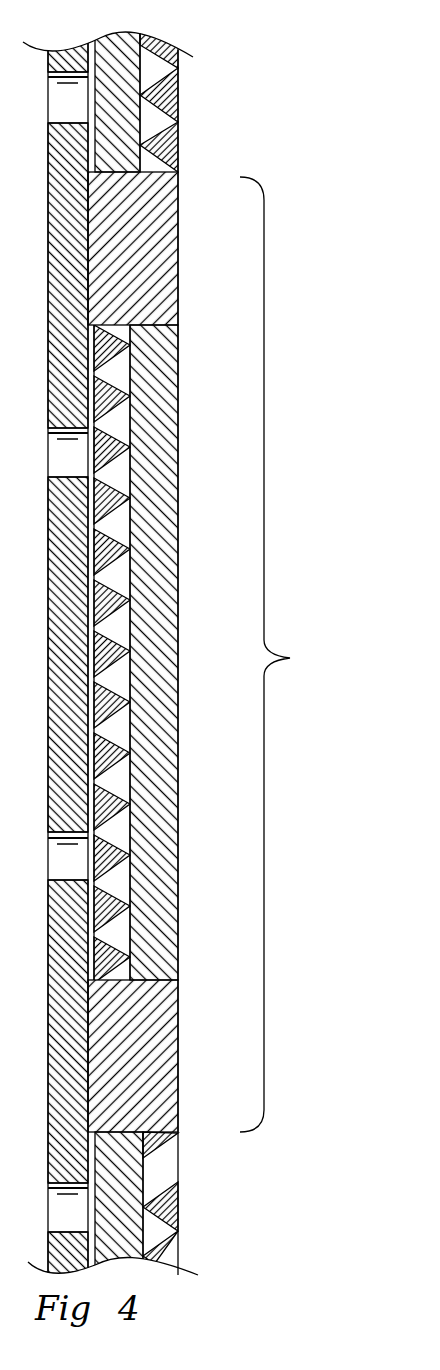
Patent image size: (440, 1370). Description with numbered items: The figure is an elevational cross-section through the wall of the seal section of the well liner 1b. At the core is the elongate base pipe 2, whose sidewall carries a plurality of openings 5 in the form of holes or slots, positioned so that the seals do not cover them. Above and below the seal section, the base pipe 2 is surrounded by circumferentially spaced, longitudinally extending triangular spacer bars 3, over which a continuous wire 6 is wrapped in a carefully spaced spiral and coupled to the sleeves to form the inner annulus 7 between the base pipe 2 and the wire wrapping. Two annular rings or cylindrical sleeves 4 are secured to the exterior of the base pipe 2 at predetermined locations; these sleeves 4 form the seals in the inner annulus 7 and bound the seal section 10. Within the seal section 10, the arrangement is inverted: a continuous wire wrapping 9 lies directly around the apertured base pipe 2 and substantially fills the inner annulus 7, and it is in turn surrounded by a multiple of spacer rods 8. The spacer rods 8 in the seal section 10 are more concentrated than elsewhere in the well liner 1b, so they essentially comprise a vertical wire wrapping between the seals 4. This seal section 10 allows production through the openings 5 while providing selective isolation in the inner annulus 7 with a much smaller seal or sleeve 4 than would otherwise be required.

The well liner 1b is at (186, 492).
The base pipe 2 is at (63, 370).
The spacer bars 3 is at (127, 43).
The sleeves 4 is at (160, 210).
The openings 5 is at (67, 100).
The continuous wire 6 is at (163, 100).
The inner annulus 7 is at (120, 583).
The spacer rods 8 is at (157, 870).
The wire wrapping 9 is at (120, 747).
The seal section 10 is at (284, 654).